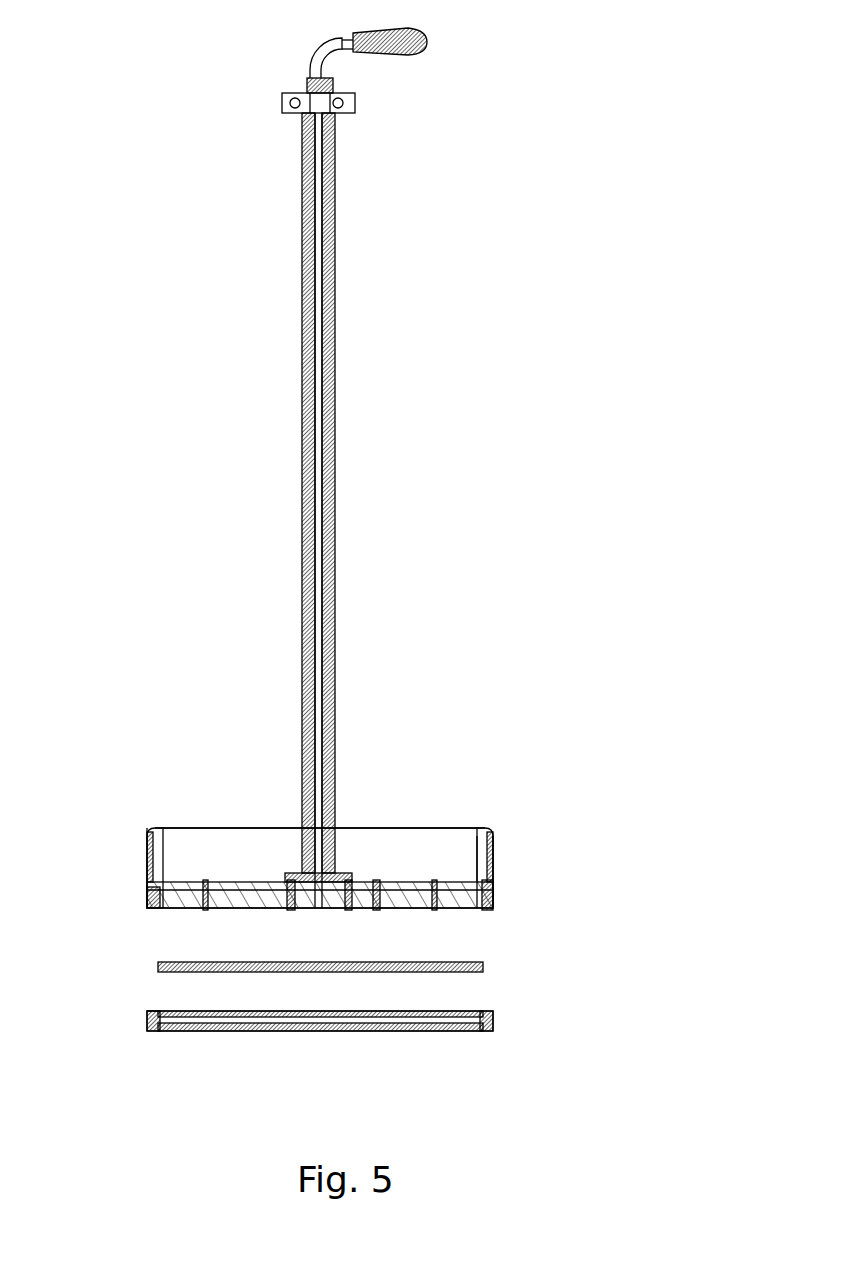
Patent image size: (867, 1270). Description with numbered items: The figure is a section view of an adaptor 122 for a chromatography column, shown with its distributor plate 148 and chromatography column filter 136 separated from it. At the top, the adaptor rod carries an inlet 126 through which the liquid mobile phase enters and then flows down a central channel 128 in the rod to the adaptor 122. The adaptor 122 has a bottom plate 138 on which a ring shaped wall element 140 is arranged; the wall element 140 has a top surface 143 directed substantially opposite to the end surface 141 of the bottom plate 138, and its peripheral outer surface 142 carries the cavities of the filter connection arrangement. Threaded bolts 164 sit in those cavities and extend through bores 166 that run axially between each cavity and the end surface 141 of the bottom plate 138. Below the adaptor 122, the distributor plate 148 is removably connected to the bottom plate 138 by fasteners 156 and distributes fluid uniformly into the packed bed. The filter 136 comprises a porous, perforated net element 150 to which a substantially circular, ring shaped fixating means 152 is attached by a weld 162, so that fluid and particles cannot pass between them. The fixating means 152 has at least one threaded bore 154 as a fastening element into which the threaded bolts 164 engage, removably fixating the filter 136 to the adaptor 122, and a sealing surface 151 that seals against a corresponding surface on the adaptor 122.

The inlet 126 is at (428, 42).
The central channel 128 is at (315, 460).
The bottom plate 138 is at (397, 870).
The adaptor 122 is at (493, 862).
The fasteners 156 is at (198, 870).
The top surface 143 is at (480, 827).
The ring shaped wall element 140 is at (492, 850).
The peripheral outer surface 142 is at (493, 857).
The threaded bolts 164 is at (493, 887).
The bore 166 is at (493, 900).
The end surface 141 is at (440, 908).
The distributor plate 148 is at (165, 962).
The fixating means 152 is at (468, 1010).
The net element 150 is at (402, 1030).
The chromatography column filter 136 is at (228, 1030).
The weld 162 is at (153, 1018).
The sealing surface 151 is at (155, 1015).
The threaded bore 154 is at (493, 1017).